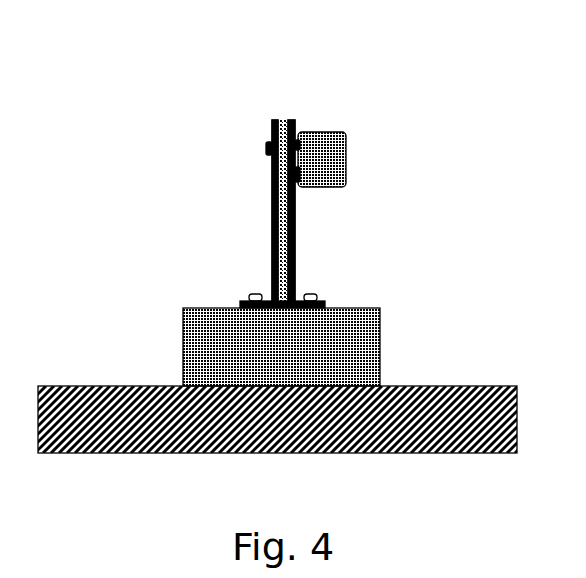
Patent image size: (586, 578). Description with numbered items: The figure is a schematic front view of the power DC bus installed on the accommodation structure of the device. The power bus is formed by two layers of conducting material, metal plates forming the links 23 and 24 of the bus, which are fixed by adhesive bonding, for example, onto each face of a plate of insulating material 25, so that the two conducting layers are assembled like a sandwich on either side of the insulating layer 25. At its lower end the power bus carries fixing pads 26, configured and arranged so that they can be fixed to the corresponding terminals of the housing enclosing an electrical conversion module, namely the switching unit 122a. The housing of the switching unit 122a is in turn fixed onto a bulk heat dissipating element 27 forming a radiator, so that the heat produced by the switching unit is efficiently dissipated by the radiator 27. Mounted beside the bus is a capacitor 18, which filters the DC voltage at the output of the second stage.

The capacitor 18 is at (345, 163).
The link of the power bus 23 is at (293, 118).
The link of the power bus 24 is at (275, 118).
The layer of insulating material 25 is at (272, 230).
The fixing pads 26 is at (240, 298).
The switching unit 122a is at (381, 309).
The heat dissipating element 27 is at (488, 386).